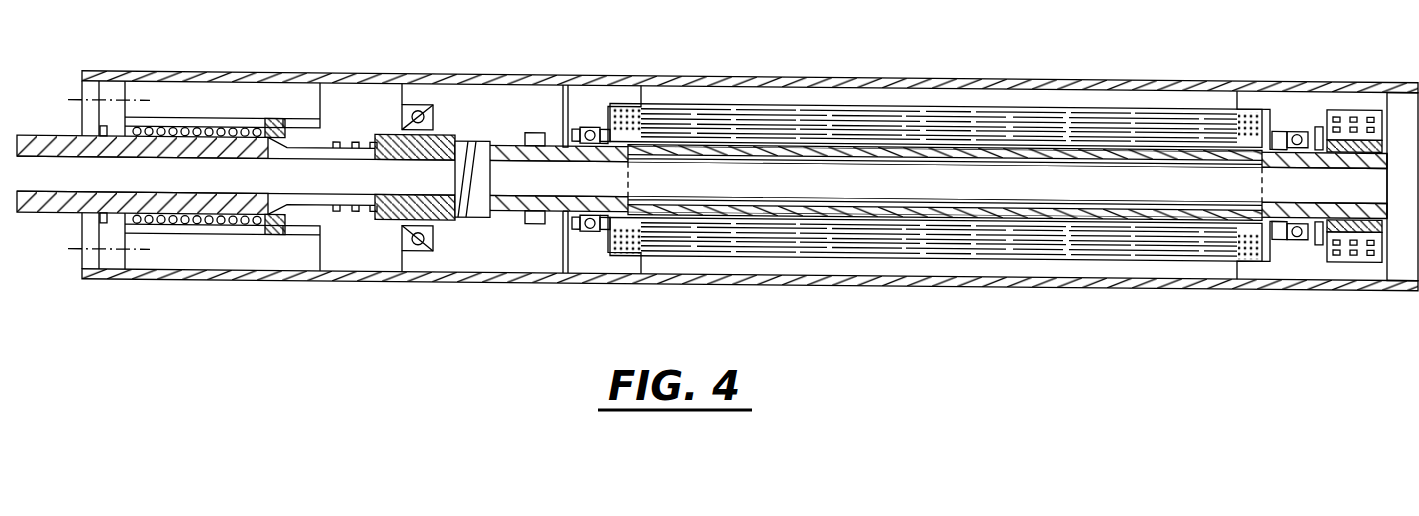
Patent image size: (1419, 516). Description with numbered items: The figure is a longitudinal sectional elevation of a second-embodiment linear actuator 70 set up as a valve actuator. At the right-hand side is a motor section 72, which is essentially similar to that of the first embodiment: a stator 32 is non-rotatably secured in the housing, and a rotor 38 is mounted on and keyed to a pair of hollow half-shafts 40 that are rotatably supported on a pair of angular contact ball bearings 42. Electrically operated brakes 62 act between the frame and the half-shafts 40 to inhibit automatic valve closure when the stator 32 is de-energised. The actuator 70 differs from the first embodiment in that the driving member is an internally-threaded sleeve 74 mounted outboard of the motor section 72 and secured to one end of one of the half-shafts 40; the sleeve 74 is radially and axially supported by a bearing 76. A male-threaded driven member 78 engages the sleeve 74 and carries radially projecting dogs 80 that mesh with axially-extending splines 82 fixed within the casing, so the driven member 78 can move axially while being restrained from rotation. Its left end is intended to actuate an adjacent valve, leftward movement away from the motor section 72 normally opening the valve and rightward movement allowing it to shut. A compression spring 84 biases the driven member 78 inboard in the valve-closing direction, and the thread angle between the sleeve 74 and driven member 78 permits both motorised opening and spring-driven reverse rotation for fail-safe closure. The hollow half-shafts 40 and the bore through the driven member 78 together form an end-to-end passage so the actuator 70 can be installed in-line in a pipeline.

The stator 32 is at (937, 99).
The rotor 38 is at (1008, 118).
The half-shafts 40 is at (985, 151).
The angular contact ball bearings 42 is at (590, 118).
The electrically operated brakes 62 is at (1362, 125).
The linear actuator 70 is at (440, 281).
The motor section 72 is at (1096, 59).
The internally-threaded sleeve 74 is at (478, 219).
The bearing 76 is at (424, 101).
The driven member 78 is at (312, 203).
The radially projecting dogs 80 is at (279, 127).
The axially-extending splines 82 is at (240, 117).
The compression spring 84 is at (222, 226).